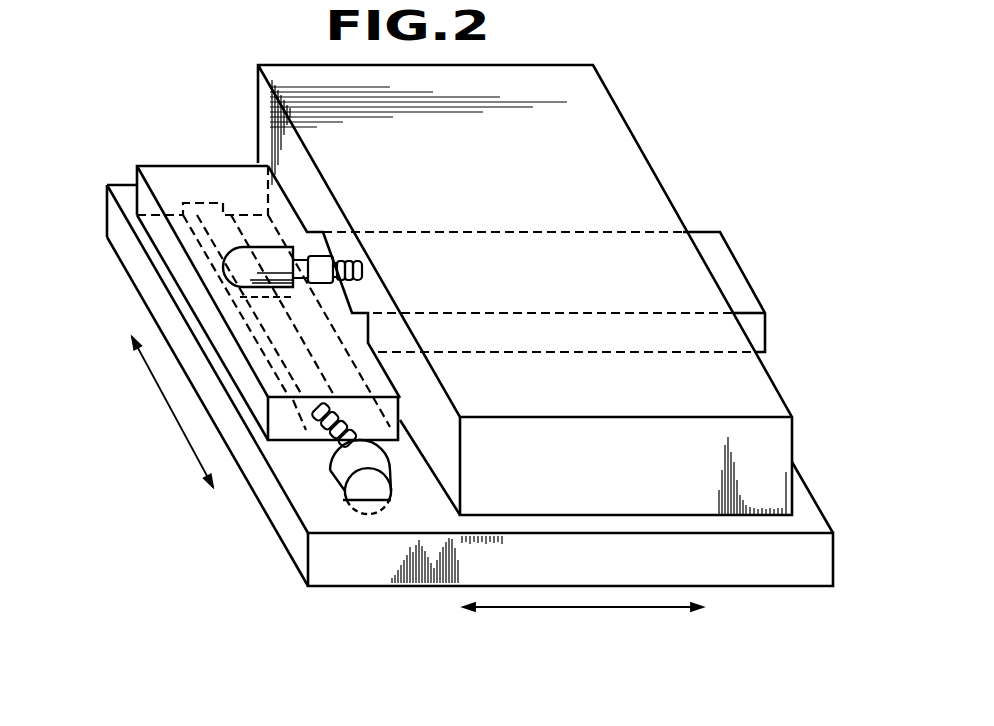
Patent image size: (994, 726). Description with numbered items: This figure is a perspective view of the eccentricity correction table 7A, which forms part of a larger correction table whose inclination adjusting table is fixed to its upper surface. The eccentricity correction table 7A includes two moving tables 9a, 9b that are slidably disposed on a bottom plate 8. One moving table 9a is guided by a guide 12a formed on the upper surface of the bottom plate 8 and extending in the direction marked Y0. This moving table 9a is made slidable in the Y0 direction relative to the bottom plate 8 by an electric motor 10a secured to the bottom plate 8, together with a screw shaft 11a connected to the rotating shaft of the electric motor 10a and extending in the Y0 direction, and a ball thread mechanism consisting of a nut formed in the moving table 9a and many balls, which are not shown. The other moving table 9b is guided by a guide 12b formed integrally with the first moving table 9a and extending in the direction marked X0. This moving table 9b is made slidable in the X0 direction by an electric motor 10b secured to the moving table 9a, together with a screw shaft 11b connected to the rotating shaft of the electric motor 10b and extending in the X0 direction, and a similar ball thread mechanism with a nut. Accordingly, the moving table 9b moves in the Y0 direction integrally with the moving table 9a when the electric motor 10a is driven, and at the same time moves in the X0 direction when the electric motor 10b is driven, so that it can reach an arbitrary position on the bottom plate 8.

The eccentricity correction table 7A is at (715, 93).
The bottom plate 8 is at (296, 567).
The moving table 9a is at (184, 183).
The moving table 9b is at (640, 192).
The electric motor 10a is at (343, 477).
The electric motor 10b is at (255, 247).
The screw shaft 11a is at (312, 422).
The screw shaft 11b is at (349, 258).
The guide 12a is at (205, 228).
The guide 12b is at (733, 254).